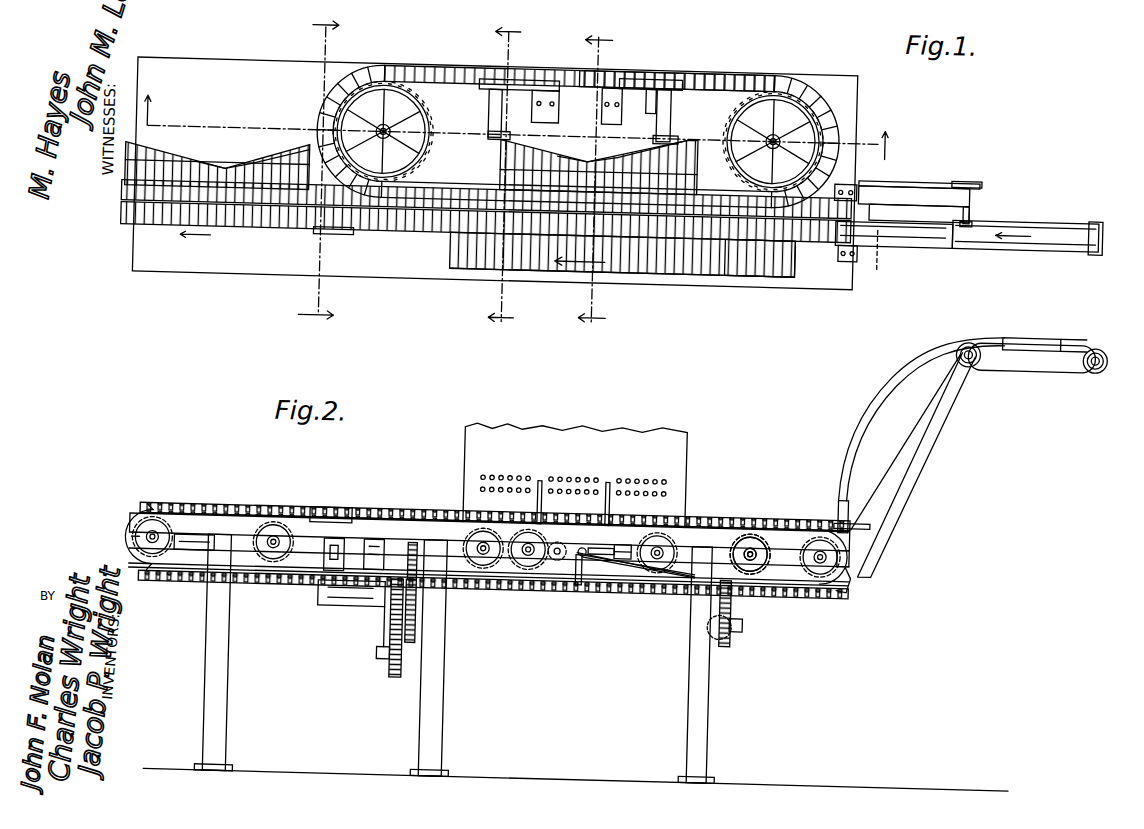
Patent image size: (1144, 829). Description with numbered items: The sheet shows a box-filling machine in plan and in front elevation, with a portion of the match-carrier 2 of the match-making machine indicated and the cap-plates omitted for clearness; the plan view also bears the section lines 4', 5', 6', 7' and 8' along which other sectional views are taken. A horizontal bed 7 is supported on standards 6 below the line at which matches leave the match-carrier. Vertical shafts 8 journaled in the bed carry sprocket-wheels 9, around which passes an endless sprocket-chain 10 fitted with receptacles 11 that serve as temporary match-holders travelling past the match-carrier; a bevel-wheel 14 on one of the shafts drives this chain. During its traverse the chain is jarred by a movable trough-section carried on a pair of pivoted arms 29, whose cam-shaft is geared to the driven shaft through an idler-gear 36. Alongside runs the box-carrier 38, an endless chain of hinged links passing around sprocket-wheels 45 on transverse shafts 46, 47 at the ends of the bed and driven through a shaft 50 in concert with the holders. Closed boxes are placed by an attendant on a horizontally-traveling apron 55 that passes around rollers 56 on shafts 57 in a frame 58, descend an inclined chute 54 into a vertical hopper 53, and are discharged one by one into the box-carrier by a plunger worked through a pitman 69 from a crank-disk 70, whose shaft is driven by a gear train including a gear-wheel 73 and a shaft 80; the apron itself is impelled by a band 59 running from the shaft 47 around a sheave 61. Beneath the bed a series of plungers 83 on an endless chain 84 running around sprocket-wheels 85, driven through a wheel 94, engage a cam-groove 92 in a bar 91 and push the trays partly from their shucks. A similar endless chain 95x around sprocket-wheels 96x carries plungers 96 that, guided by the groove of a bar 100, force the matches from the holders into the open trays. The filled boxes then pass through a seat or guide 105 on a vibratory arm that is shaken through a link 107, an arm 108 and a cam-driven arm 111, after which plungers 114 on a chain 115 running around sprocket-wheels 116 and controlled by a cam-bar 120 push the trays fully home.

In FIG. 2, the match-carrier 2 is at (685, 442).
In FIG. 2, the standards 6 is at (578, 662).
In FIG. 1, the bed 7 is at (495, 157).
In FIG. 2, the bed 7 is at (472, 522).
In FIG. 1, the vertical shafts 8 is at (586, 132).
In FIG. 1, the sprocket-wheels 9 is at (430, 104).
In FIG. 1, the endless sprocket-chain 10 is at (742, 60).
In FIG. 1, the receptacles 11 is at (437, 60).
In FIG. 2, the bevel-wheel 14 is at (385, 550).
In FIG. 1, the arms 29 is at (500, 98).
In FIG. 2, the idler-gear 36 is at (730, 628).
In FIG. 1, the box-carrier 38 is at (268, 224).
In FIG. 2, the box-carrier 38 is at (210, 512).
In FIG. 2, the sprocket-wheels 45 is at (855, 576).
In FIG. 2, the transverse shaft 46 is at (128, 532).
In FIG. 2, the transverse shaft 47 is at (825, 560).
In FIG. 2, the shaft 50 is at (205, 548).
In FIG. 2, the hopper 53 is at (838, 485).
In FIG. 1, the inclined chute 54 is at (935, 228).
In FIG. 2, the inclined chute 54 is at (860, 380).
In FIG. 1, the apron 55 is at (1040, 200).
In FIG. 2, the apron 55 is at (1050, 348).
In FIG. 2, the rollers 56 is at (971, 345).
In FIG. 1, the shafts 57 is at (978, 188).
In FIG. 2, the shafts 57 is at (964, 320).
In FIG. 2, the frame 58 is at (1030, 315).
In FIG. 1, the band 59 is at (900, 162).
In FIG. 2, the band 59 is at (930, 432).
In FIG. 1, the sheave 61 is at (975, 160).
In FIG. 2, the pitman 69 is at (622, 565).
In FIG. 2, the crank-disk 70 is at (583, 538).
In FIG. 2, the gear-wheel 73 is at (560, 552).
In FIG. 2, the shaft 80 is at (620, 532).
In FIG. 1, the plungers 83 is at (745, 262).
In FIG. 1, the endless chain 84 is at (470, 236).
In FIG. 2, the sprocket-wheels 85 is at (482, 580).
In FIG. 1, the bar 91 is at (665, 258).
In FIG. 1, the cam-groove 92 is at (710, 262).
In FIG. 2, the wheel 94 is at (529, 560).
In FIG. 1, the endless chain 95x is at (660, 122).
In FIG. 1, the plungers 96 is at (565, 150).
In FIG. 2, the sprocket-wheels 96x is at (660, 565).
In FIG. 1, the bar 100 is at (530, 150).
In FIG. 1, the seat or guide 105 is at (340, 229).
In FIG. 2, the seat or guide 105 is at (340, 503).
In FIG. 2, the link 107 is at (335, 545).
In FIG. 2, the arm 108 is at (325, 600).
In FIG. 2, the arm 111 is at (392, 632).
In FIG. 1, the plungers 114 is at (160, 150).
In FIG. 1, the chain 115 is at (226, 160).
In FIG. 2, the sprocket-wheels 116 is at (274, 560).
In FIG. 1, the cam-bar 120 is at (282, 150).
In FIG. 1, the section line 4' is at (597, 179).
In FIG. 1, the section line 5' is at (506, 175).
In FIG. 1, the section line 6' is at (320, 170).
In FIG. 1, the section line 7' is at (887, 258).
In FIG. 1, the section line 8' is at (526, 124).